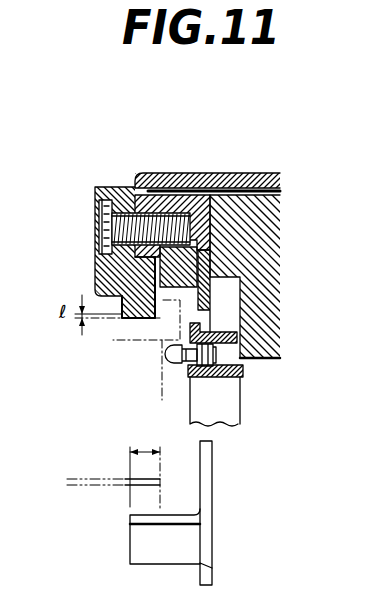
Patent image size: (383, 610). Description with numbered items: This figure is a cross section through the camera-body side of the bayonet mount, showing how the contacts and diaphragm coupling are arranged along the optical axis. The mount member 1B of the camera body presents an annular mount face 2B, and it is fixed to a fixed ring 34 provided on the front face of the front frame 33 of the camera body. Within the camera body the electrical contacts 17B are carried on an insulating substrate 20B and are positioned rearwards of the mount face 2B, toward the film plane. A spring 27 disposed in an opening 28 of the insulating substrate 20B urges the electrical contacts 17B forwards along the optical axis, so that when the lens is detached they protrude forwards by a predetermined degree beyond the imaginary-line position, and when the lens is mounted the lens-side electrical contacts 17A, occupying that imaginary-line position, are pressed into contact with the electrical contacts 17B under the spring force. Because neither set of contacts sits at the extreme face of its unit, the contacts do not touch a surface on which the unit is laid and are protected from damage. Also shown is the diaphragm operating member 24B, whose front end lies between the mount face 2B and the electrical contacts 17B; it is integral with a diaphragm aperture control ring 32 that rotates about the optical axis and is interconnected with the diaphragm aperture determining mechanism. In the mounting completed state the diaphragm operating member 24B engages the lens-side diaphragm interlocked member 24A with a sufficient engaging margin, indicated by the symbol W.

The mount member 1B is at (118, 186).
The mount face 2B is at (96, 272).
The fixed ring 34 is at (178, 172).
The front frame 33 is at (237, 172).
The diaphragm aperture control ring 32 is at (210, 293).
The opening 28 is at (228, 352).
The spring 27 is at (240, 366).
The insulating substrate 20B is at (220, 380).
The electrical contacts 17A is at (172, 364).
The electrical contacts 17B is at (166, 349).
The diaphragm interlocked member 24A is at (93, 466).
The diaphragm operating member 24B is at (143, 541).